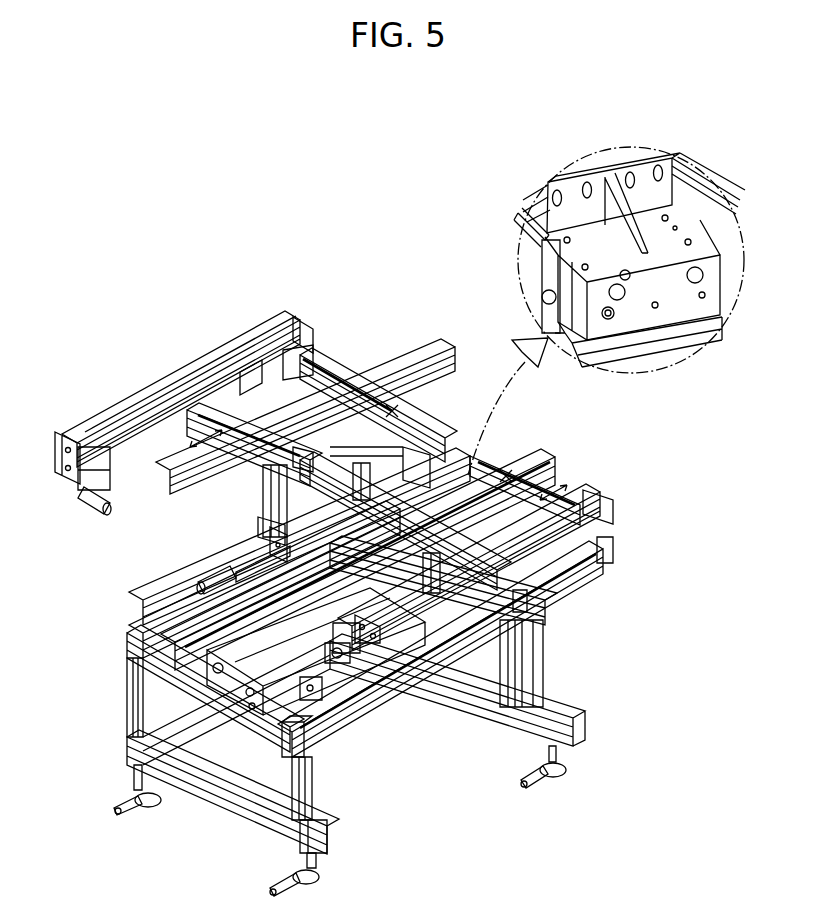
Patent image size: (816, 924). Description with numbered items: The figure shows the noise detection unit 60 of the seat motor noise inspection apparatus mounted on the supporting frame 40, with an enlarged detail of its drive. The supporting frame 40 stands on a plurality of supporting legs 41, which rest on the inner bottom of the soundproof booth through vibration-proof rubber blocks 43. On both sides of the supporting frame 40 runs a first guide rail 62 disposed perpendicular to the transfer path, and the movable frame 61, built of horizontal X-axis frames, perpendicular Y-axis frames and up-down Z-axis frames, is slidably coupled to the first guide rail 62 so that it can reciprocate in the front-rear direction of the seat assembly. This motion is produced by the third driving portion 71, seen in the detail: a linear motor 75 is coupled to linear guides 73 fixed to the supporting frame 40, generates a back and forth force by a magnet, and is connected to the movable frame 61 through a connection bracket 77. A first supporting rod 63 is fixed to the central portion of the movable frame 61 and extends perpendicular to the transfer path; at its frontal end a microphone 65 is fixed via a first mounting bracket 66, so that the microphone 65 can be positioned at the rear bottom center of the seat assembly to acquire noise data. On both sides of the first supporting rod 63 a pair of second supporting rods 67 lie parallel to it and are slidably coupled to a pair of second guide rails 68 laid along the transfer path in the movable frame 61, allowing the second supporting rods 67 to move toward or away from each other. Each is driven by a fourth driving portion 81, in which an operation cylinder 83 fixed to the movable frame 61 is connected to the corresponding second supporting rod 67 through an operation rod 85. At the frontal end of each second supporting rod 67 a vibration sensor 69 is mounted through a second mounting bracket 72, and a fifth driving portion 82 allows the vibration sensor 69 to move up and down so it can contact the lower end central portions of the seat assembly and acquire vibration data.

The supporting frame 40 is at (429, 491).
The supporting legs 41 is at (560, 757).
The vibration-proof rubber block 43 is at (566, 782).
The noise detection unit 60 is at (357, 141).
The movable frame 61 is at (578, 570).
The first guide rail 62 is at (154, 612).
The first supporting rod 63 is at (270, 520).
The microphone 65 is at (208, 583).
The first mounting bracket 66 is at (247, 560).
The second supporting rods 67 is at (113, 427).
The second guide rails 68 is at (220, 360).
The vibration sensor 69 is at (100, 511).
The third driving portion 71 is at (532, 257).
The second mounting bracket 72 is at (56, 470).
The linear guides 73 is at (522, 236).
The linear motor 75 is at (541, 298).
The connection bracket 77 is at (644, 218).
The fourth driving portion 81 is at (400, 412).
The fifth driving portion 82 is at (108, 461).
The operation cylinder 83 is at (345, 395).
The operation rod 85 is at (267, 347).